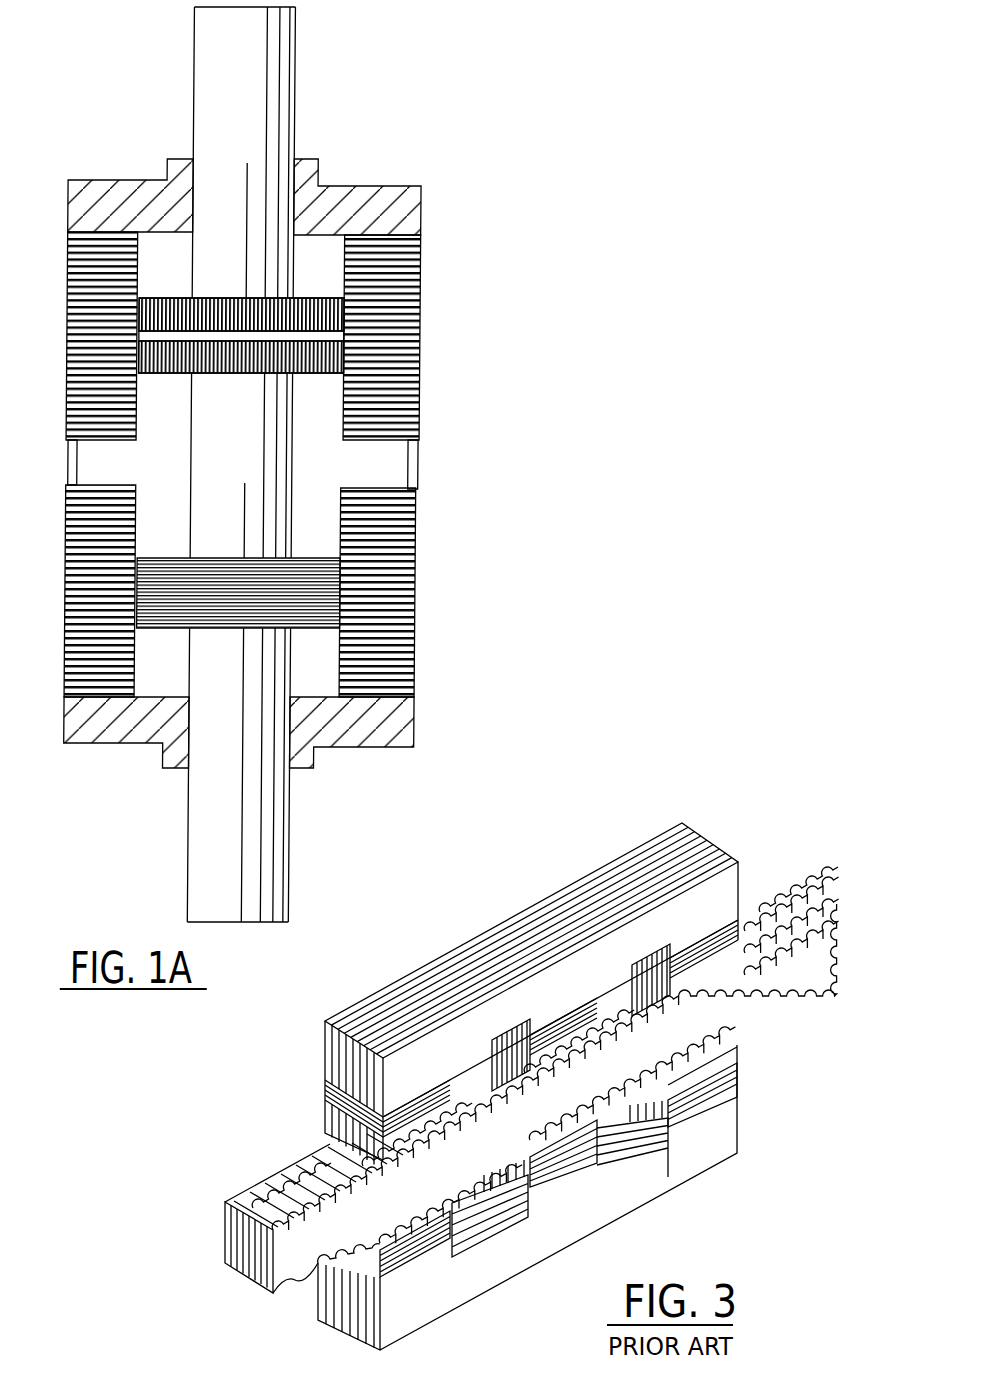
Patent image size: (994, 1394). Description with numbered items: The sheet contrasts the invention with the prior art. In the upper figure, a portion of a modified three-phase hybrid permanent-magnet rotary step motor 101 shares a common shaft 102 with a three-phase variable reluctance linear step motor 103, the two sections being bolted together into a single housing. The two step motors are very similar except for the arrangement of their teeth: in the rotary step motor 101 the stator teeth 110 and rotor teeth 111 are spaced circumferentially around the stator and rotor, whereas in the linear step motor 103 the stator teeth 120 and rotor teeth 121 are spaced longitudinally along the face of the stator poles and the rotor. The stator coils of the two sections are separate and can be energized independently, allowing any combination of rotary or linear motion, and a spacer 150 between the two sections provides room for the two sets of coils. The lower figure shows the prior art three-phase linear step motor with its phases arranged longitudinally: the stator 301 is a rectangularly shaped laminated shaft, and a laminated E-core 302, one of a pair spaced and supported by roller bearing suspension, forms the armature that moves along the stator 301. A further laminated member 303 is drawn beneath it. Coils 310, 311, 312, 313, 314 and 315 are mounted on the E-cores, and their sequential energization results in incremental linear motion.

In FIG. 1A, the rotary step motor 101 is at (417, 278).
In FIG. 1A, the common shaft 102 is at (292, 815).
In FIG. 1A, the linear step motor 103 is at (419, 663).
In FIG. 1A, the stator teeth of rotary step motor 110 is at (138, 407).
In FIG. 1A, the rotor teeth of rotary step motor 111 is at (319, 299).
In FIG. 1A, the stator teeth of linear step motor 120 is at (343, 513).
In FIG. 1A, the rotor teeth of linear step motor 121 is at (310, 630).
In FIG. 1A, the spacer 150 is at (421, 464).
In FIG. 3, the stator 301 is at (243, 1268).
In FIG. 3, the laminated E-core 302 is at (540, 902).
In FIG. 3, the laminated base 303 is at (713, 1165).
In FIG. 3, the coil 310 is at (427, 1252).
In FIG. 3, the coil 311 is at (567, 1173).
In FIG. 3, the coil 312 is at (738, 1093).
In FIG. 3, the coil 313 is at (320, 1095).
In FIG. 3, the coil 314 is at (550, 1022).
In FIG. 3, the coil 315 is at (733, 920).